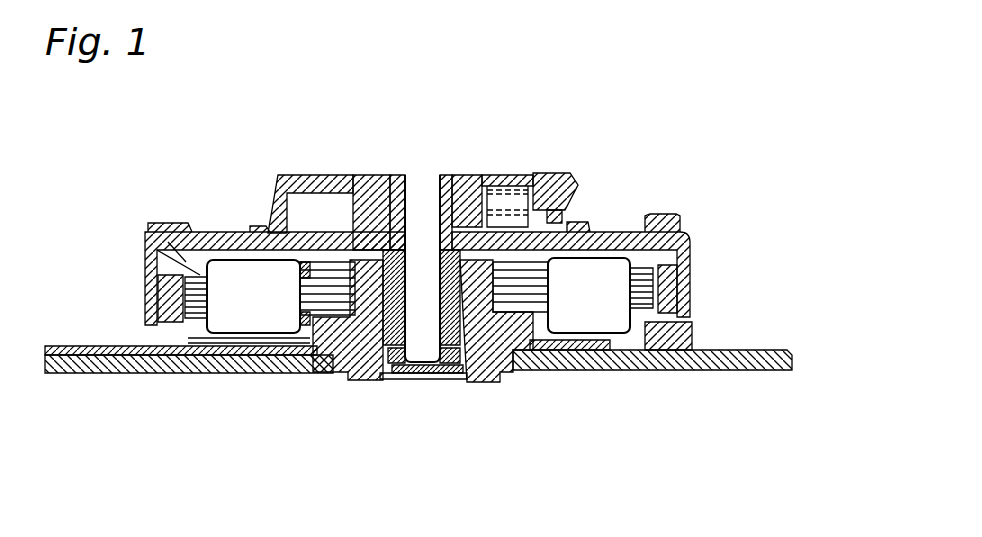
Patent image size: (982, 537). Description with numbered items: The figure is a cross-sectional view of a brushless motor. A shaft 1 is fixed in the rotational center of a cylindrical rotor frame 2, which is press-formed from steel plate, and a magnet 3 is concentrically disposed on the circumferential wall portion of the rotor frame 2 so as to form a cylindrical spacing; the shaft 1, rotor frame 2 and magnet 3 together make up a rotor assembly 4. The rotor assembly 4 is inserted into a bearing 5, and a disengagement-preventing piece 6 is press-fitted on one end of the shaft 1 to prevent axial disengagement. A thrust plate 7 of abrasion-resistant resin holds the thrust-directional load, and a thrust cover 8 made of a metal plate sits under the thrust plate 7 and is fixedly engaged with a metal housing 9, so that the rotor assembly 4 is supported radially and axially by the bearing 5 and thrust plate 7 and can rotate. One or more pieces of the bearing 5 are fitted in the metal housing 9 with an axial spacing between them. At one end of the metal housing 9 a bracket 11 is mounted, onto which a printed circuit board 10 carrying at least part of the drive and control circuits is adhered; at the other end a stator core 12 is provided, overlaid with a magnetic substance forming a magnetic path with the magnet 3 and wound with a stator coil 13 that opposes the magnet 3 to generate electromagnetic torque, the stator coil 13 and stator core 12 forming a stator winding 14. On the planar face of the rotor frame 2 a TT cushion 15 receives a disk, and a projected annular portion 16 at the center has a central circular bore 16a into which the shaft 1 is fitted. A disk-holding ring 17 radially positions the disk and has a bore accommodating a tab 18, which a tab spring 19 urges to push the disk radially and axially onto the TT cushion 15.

The shaft 1 is at (441, 177).
The rotor frame 2 is at (693, 240).
The magnet 3 is at (692, 284).
The rotor assembly 4 is at (243, 229).
The bearing 5 is at (467, 332).
The disengagement-preventing piece 6 is at (388, 379).
The thrust plate 7 is at (455, 378).
The thrust cover 8 is at (430, 378).
The metal housing 9 is at (334, 383).
The printed circuit board 10 is at (95, 347).
The bracket 11 is at (198, 374).
The stator core 12 is at (168, 272).
The stator coil 13 is at (202, 276).
The stator winding 14 is at (207, 220).
The TT cushion 15 is at (668, 215).
The projected annular portion 16 is at (392, 178).
The central circular bore 16a is at (418, 193).
The disk-holding ring 17 is at (312, 175).
The tab 18 is at (567, 174).
The tab spring 19 is at (525, 174).